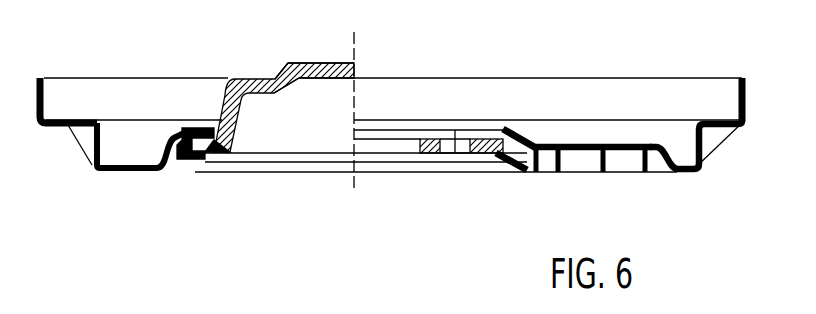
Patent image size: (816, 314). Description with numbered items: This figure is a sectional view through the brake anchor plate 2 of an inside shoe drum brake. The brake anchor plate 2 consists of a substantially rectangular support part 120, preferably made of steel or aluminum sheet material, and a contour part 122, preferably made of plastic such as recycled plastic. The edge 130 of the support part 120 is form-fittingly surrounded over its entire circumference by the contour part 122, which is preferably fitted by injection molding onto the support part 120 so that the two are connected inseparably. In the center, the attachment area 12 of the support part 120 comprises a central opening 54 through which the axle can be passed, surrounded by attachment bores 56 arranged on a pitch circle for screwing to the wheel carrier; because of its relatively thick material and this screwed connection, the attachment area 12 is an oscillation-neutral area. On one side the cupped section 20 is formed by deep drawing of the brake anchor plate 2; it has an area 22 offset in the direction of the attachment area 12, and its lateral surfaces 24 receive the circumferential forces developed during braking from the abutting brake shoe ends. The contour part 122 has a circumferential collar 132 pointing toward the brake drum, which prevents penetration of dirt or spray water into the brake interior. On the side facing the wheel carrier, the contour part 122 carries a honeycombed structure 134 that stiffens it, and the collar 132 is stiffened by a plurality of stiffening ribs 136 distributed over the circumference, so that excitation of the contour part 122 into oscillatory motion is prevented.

The brake anchor plate 2 is at (747, 128).
The attachment area 12 is at (420, 155).
The cupped section 20 is at (309, 66).
The area 22 is at (248, 80).
The lateral surfaces 24 is at (280, 67).
The central opening 54 is at (388, 148).
The attachment bores 56 is at (465, 147).
The support part 120 is at (223, 147).
The contour part 122 is at (133, 173).
The edge 130 is at (200, 155).
The circumferential collar 132 is at (746, 80).
The honeycombed structure 134 is at (604, 180).
The stiffening ribs 136 is at (704, 142).